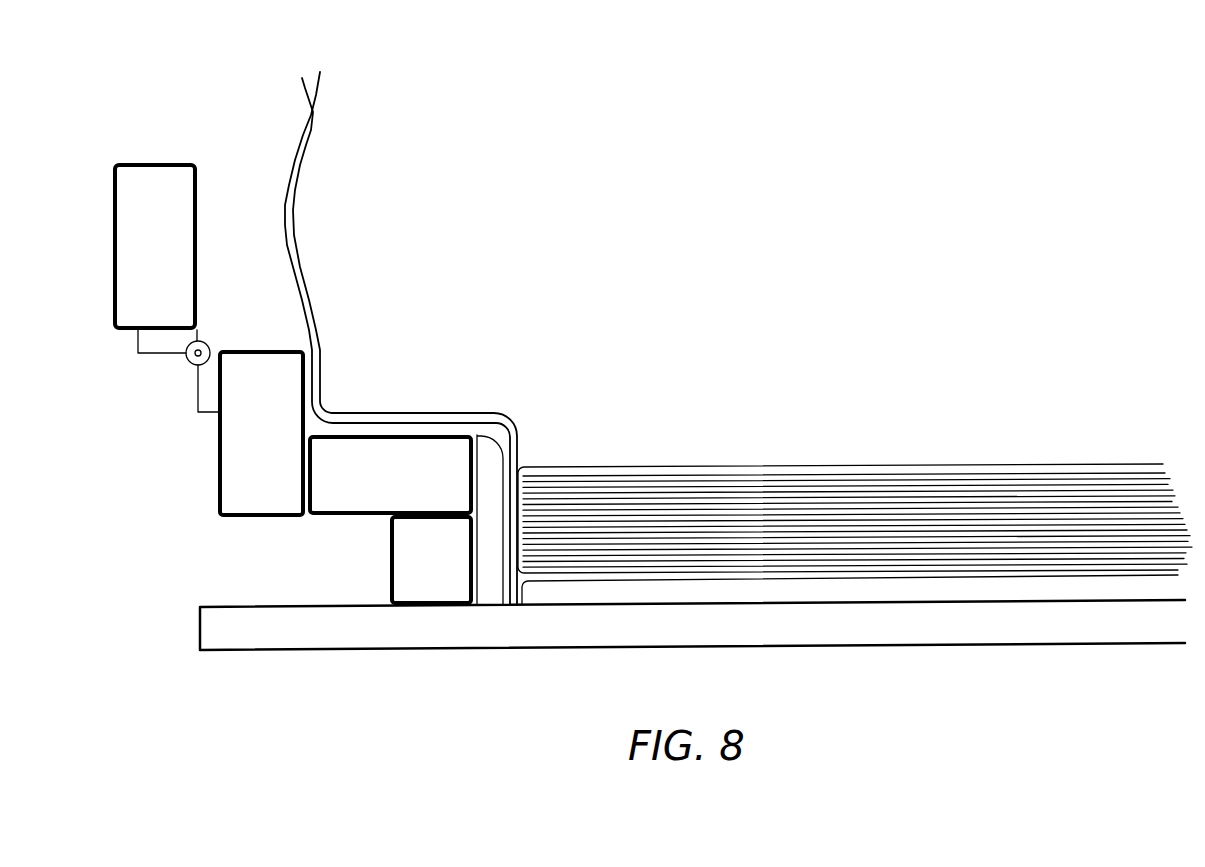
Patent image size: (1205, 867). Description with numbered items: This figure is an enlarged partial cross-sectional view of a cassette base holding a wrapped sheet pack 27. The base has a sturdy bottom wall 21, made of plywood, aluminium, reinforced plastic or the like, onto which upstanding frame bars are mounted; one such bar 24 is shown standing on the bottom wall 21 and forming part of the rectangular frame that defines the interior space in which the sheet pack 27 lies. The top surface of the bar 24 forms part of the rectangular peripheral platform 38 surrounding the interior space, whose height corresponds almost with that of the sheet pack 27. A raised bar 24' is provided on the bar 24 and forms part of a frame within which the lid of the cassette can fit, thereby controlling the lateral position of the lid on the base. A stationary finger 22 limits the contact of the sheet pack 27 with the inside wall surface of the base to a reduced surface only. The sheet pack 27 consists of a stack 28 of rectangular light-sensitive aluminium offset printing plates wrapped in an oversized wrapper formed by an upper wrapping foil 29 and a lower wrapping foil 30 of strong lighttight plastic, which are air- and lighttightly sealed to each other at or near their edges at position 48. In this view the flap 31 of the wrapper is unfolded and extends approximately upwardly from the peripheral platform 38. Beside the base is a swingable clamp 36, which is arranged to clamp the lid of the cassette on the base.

The bottom wall 21 is at (230, 650).
The stationary finger 22 is at (491, 456).
The upstanding bar 24 is at (390, 520).
The raised bar 24' is at (224, 433).
The sheet pack 27 is at (750, 462).
The stack of plates 28 is at (978, 517).
The upper wrapping foil 29 is at (302, 163).
The lower wrapping foil 30 is at (306, 308).
The flap 31 is at (255, 138).
The clamp 36 is at (115, 275).
The peripheral platform 38 is at (386, 432).
The sealing position 48 is at (315, 117).